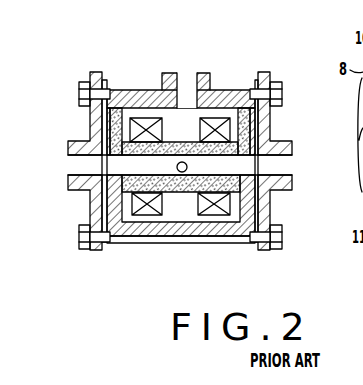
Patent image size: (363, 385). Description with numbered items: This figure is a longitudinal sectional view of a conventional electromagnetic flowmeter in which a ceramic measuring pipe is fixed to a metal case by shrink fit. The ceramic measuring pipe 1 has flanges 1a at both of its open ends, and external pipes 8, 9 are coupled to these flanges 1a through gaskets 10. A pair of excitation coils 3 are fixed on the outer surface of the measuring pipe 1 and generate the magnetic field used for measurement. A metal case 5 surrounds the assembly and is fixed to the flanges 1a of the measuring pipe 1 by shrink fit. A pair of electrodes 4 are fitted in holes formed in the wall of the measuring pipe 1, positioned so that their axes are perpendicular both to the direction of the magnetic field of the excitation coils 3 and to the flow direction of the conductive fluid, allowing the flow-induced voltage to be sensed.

The ceramic measuring pipe 1 is at (179, 128).
The flanges 1a is at (111, 106).
The excitation coils 3 is at (221, 112).
The electrodes 4 is at (182, 173).
The metal case 5 is at (211, 80).
The pipe 8 is at (80, 141).
The pipe 9 is at (290, 143).
The gaskets 10 is at (100, 118).